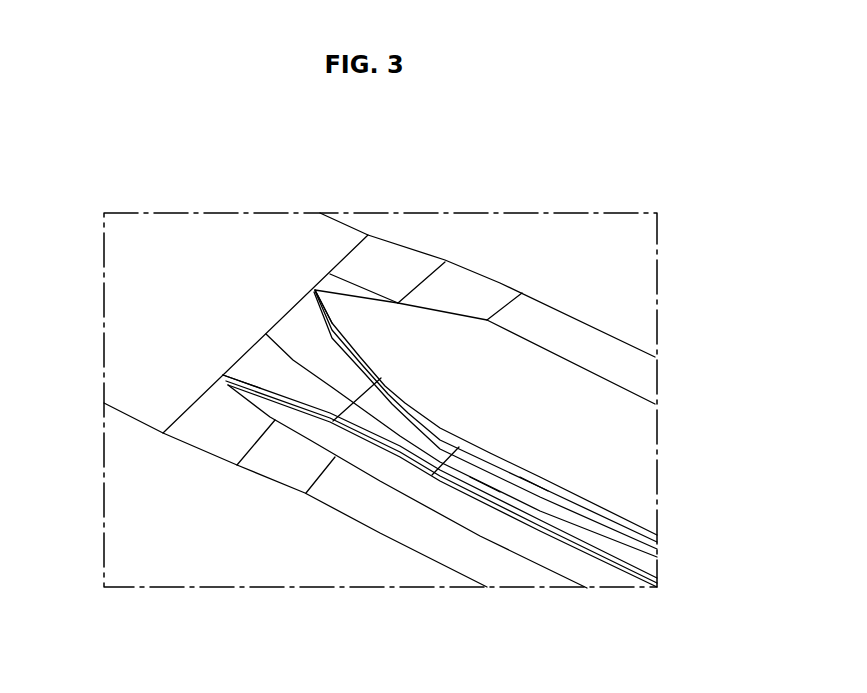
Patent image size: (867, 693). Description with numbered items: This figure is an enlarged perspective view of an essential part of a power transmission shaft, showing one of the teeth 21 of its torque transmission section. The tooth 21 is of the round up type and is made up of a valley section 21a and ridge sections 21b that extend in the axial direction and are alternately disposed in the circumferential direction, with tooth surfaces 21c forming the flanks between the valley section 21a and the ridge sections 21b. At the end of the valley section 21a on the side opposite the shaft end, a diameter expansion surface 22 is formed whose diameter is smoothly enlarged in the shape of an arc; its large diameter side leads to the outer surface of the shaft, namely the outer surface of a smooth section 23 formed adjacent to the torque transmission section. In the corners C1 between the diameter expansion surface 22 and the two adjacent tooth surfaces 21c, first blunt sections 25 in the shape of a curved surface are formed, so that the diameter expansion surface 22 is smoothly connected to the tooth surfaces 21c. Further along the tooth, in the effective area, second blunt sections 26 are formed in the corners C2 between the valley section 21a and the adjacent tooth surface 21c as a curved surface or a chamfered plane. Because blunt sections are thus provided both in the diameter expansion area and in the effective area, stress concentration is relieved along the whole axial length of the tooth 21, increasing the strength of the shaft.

The tooth 21 is at (558, 307).
The valley section 21a is at (560, 516).
The ridge section 21b is at (370, 510).
The tooth surface 21c is at (667, 356).
The diameter expansion surface 22 is at (280, 295).
The smooth section 23 is at (130, 322).
The first blunt section 25 is at (485, 353).
The second blunt section 26 is at (617, 560).
The corner C1 is at (400, 188).
The corner C2 is at (594, 357).